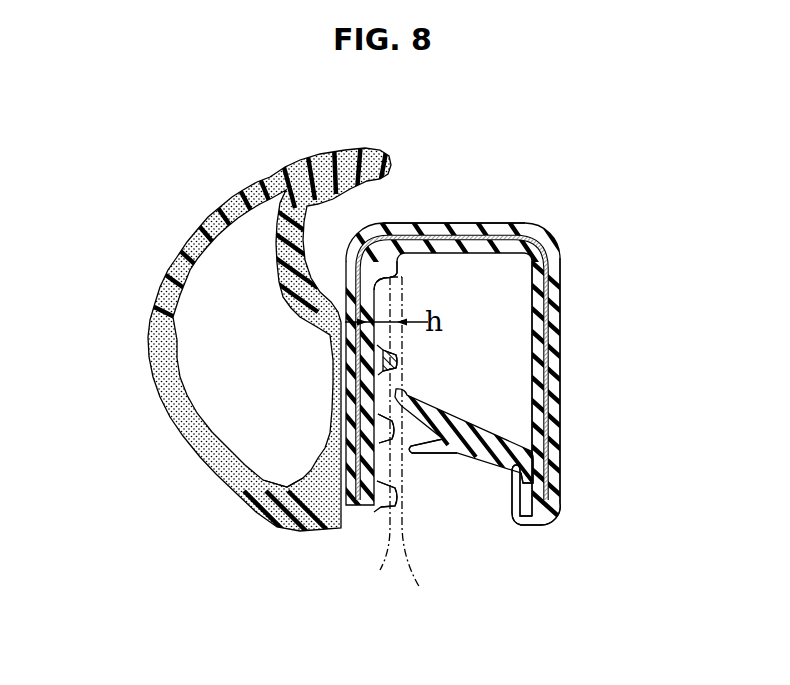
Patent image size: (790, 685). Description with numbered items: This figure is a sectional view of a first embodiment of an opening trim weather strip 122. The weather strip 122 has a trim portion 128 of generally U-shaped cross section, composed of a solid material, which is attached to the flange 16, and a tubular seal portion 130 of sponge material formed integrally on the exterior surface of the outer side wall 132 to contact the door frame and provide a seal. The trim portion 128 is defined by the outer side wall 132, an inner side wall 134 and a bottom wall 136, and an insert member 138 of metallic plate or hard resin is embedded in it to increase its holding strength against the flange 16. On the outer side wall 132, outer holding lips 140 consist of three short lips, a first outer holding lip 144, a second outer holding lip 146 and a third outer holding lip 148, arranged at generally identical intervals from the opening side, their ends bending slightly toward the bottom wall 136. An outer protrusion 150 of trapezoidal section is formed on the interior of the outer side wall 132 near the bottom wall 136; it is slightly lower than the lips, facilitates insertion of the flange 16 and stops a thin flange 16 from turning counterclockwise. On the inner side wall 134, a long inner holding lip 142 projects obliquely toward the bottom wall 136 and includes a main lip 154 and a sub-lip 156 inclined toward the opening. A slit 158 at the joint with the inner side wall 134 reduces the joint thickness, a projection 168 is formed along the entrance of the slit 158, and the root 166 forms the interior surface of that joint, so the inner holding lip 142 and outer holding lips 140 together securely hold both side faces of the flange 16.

The flange 16 is at (360, 550).
The opening trim weather strip 122 is at (181, 229).
The trim portion 128 is at (558, 227).
The tubular seal portion 130 is at (150, 320).
The outer side wall 132 is at (333, 388).
The inner side wall 134 is at (558, 380).
The bottom wall 136 is at (468, 223).
The insert member 138 is at (560, 293).
The outer holding lips 140 is at (356, 626).
The inner holding lip 142 is at (477, 467).
The first outer holding lip 144 is at (385, 497).
The second outer holding lip 146 is at (380, 367).
The third outer holding lip 148 is at (380, 437).
The outer protrusion 150 is at (383, 278).
The main lip 154 is at (558, 340).
The sub-lip 156 is at (423, 467).
The slit 158 is at (512, 480).
The root 166 is at (558, 413).
The projection 168 is at (523, 527).